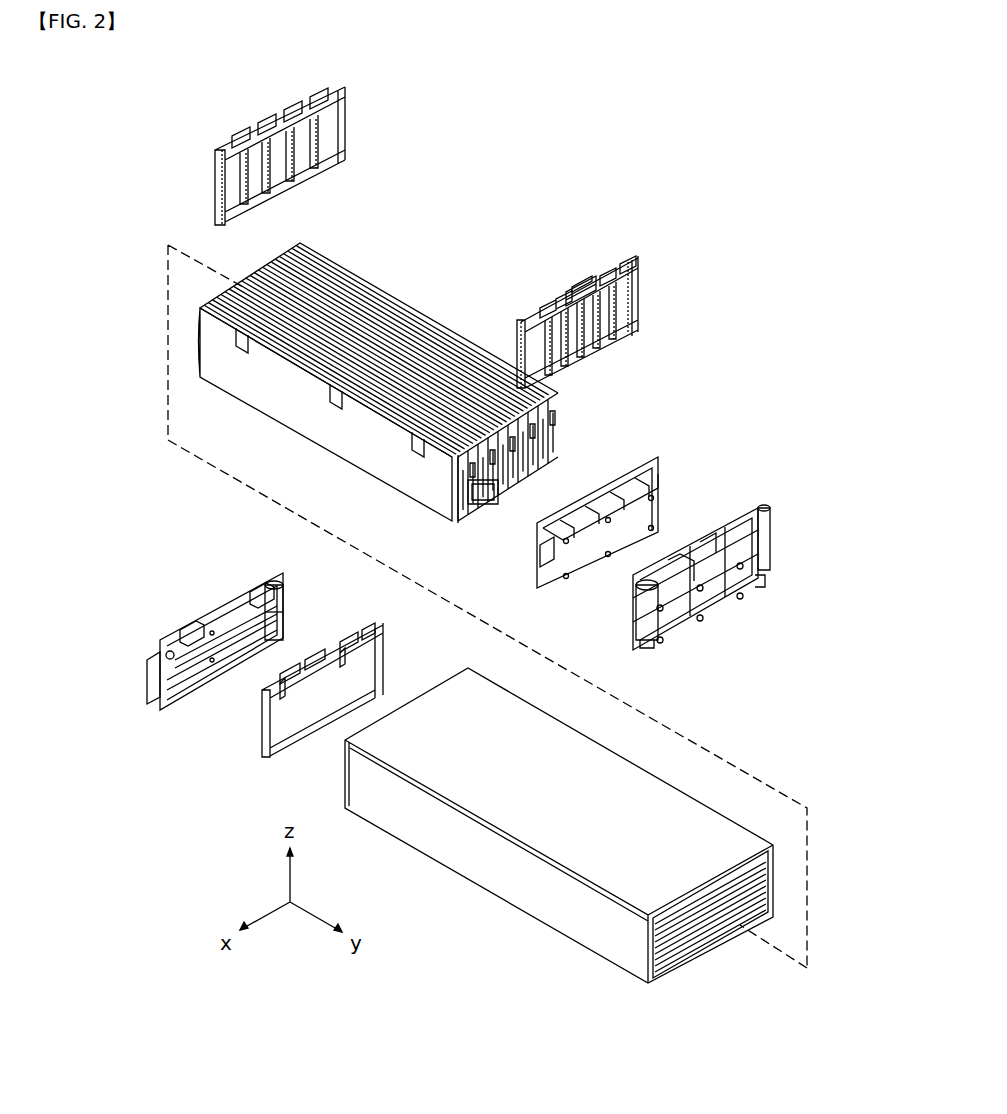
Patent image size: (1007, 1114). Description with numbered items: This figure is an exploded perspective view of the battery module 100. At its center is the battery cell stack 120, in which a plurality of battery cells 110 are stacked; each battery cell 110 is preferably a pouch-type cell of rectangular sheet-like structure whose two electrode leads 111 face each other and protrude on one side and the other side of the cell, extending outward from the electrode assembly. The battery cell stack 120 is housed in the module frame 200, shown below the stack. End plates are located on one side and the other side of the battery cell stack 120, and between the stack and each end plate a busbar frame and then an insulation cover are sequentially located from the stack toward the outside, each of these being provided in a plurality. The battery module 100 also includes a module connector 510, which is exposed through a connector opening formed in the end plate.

The battery module 100 is at (507, 64).
The battery cell 110 is at (390, 468).
The electrode lead 111 is at (497, 504).
The battery cell stack 120 is at (606, 401).
The module frame 200 is at (492, 870).
The module connector 510 is at (580, 298).